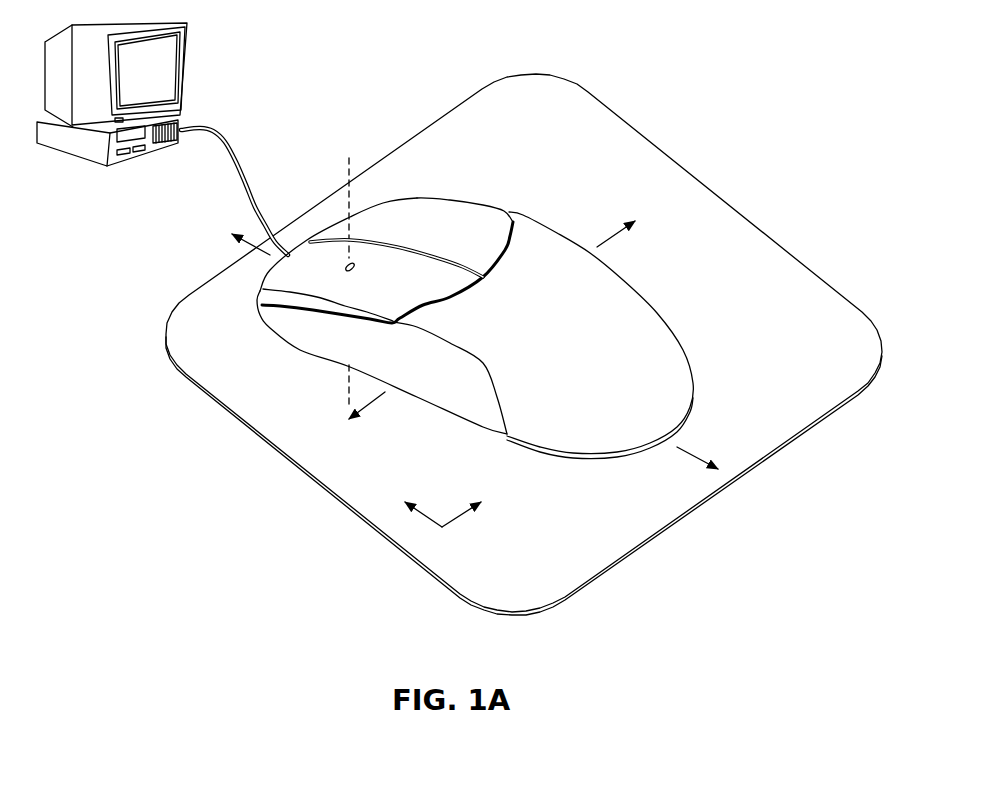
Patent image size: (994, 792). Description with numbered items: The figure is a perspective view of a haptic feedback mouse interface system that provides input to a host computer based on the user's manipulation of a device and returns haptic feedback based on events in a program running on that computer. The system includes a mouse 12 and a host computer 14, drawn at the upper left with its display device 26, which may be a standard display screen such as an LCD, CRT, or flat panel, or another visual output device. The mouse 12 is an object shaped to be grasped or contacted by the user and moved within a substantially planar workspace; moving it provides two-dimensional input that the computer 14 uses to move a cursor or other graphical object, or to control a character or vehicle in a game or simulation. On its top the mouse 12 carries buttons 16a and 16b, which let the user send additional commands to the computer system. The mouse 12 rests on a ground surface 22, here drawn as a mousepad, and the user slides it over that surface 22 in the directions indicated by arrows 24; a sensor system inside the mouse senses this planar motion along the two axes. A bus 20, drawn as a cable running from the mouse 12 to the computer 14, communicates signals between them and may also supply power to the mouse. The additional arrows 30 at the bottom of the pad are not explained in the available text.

The mouse 12 is at (490, 302).
The computer 14 is at (113, 174).
The left mouse button 16a is at (302, 255).
The right mouse button 16b is at (427, 208).
The cable 20 is at (235, 152).
The mouse pad 22 is at (592, 524).
The movement direction arrows 24 is at (607, 233).
The monitor 26 is at (185, 72).
The tilt direction arrows 30 is at (458, 518).